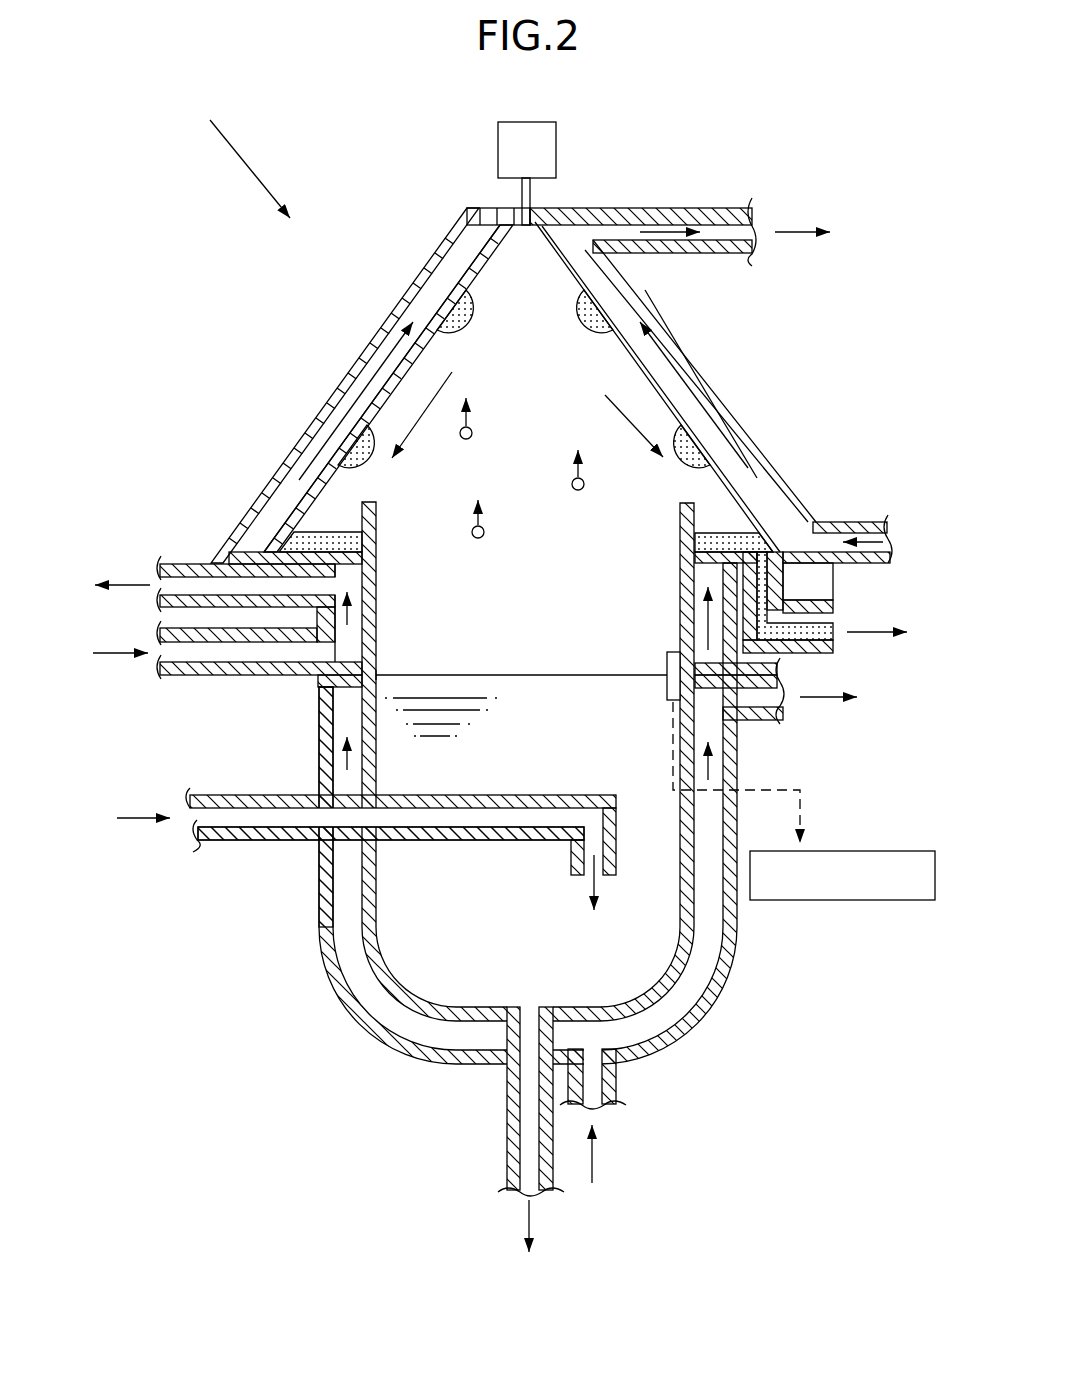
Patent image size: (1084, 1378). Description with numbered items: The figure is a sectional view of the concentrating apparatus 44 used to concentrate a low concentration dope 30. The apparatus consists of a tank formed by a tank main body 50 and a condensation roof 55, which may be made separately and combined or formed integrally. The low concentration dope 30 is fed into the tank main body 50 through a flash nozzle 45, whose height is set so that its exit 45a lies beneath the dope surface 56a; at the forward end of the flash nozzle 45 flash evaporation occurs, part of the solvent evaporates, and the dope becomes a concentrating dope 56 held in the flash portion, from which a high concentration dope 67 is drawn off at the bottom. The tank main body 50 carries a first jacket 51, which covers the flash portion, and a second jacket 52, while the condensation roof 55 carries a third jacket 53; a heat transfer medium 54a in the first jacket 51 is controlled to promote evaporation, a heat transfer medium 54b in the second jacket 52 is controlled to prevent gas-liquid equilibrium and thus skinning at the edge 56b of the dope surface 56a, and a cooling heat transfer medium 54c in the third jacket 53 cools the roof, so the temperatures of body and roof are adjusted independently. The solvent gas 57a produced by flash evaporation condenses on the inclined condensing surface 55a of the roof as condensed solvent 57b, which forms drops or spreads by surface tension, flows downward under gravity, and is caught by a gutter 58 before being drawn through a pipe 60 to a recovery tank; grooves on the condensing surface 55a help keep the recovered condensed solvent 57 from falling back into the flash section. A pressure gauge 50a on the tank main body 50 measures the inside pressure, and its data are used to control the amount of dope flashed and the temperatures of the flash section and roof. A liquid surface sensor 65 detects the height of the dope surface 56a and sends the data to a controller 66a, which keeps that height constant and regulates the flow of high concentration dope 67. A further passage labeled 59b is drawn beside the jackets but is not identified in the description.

The concentrating apparatus 44 is at (234, 151).
The pressure gauge 50a is at (557, 155).
The condensing surface 55a is at (505, 270).
The third jacket 53 is at (748, 372).
The condensation roof 55 is at (240, 500).
The heat transfer medium 54c is at (335, 410).
The solvent gas 57a is at (473, 433).
The condensed solvent 57b is at (368, 458).
The gutter 58 is at (682, 514).
The coolant passage 59b is at (350, 625).
The dope surface 56a is at (510, 675).
The edge of the dope surface 56b is at (380, 674).
The exit of the flash nozzle 45a is at (612, 848).
The liquid surface sensor 65 is at (667, 662).
The pipe 60 is at (785, 610).
The recovered condensed solvent 57 is at (853, 636).
The heat transfer medium 54b is at (221, 624).
The second jacket 52 is at (314, 630).
The concentrating dope 56 is at (415, 775).
The low concentration dope 30 is at (120, 818).
The first jacket 51 is at (330, 965).
The flash nozzle 45 is at (268, 842).
The heat transfer medium 54a is at (392, 1030).
The tank main body 50 is at (742, 986).
The controller 66a is at (830, 902).
The high concentration dope 67 is at (535, 1215).